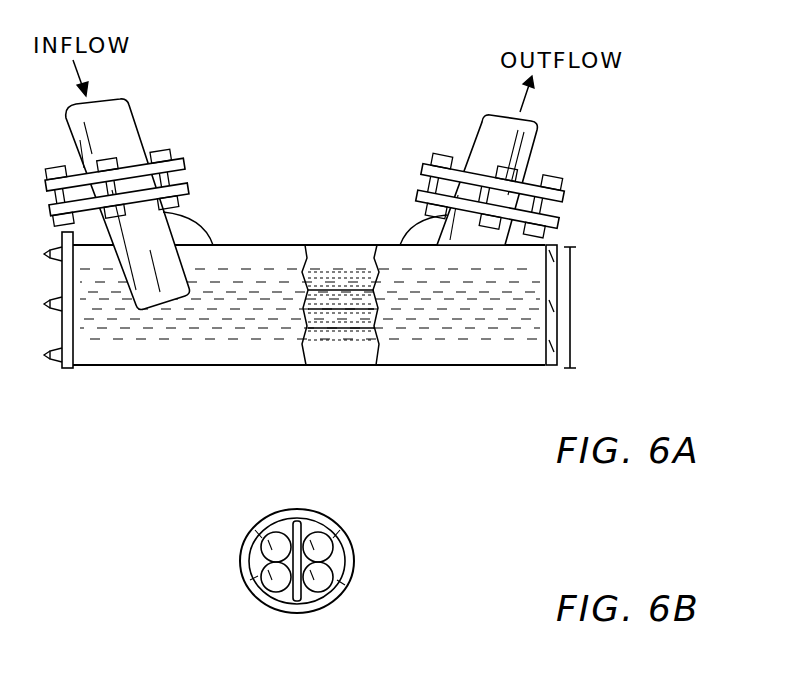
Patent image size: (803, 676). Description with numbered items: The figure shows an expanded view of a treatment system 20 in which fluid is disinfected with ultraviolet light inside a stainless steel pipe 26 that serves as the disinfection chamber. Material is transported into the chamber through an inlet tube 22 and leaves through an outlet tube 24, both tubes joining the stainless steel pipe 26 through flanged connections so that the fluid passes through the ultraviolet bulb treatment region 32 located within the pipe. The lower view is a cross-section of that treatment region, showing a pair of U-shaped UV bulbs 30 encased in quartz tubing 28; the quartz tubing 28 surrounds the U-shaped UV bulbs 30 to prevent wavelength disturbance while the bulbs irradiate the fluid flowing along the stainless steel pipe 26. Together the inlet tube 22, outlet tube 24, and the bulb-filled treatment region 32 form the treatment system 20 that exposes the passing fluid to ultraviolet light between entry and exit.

In FIG. 6A, the treatment system 20 is at (371, 382).
In FIG. 6A, the inlet tube 22 is at (115, 130).
In FIG. 6A, the outlet tube 24 is at (543, 150).
In FIG. 6A, the stainless steel pipe 26 is at (505, 352).
In FIG. 6B, the quartz tubing 28 is at (337, 527).
In FIG. 6B, the U-shaped UV bulbs 30 is at (352, 551).
In FIG. 6A, the ultraviolet bulb treatment region 32 is at (545, 330).
In FIG. 6B, the ultraviolet bulb treatment region 32 is at (281, 564).